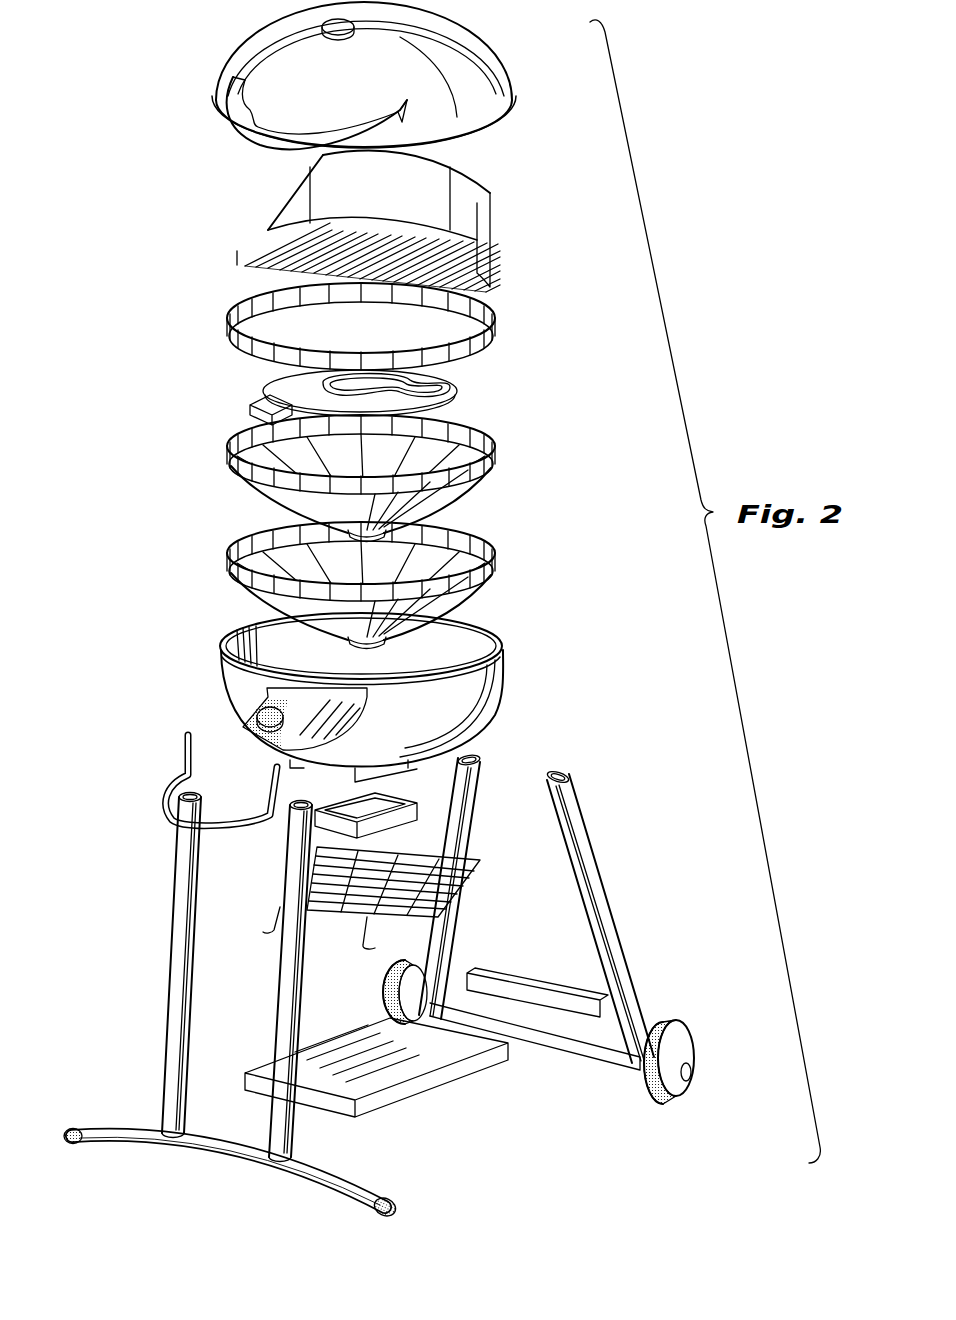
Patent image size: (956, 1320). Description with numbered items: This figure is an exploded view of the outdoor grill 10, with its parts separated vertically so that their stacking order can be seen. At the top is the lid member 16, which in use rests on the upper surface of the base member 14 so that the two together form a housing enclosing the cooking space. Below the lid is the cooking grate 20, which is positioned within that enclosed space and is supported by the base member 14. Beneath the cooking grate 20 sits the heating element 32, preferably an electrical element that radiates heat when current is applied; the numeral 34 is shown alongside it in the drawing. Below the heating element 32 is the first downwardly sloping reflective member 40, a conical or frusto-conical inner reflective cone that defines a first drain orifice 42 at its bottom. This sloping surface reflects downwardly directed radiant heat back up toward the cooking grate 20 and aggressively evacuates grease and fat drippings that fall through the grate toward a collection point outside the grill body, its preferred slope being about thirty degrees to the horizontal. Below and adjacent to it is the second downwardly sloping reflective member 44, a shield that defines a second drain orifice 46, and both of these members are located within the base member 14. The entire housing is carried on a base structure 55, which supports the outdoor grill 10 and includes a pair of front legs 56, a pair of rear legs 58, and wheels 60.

The outdoor grill 10 is at (656, 125).
The base member 14 is at (498, 672).
The lid member 16 is at (230, 62).
The cooking grate 20 is at (253, 250).
The heating element 32 is at (457, 390).
The diffuser opening 34 is at (386, 385).
The first downwardly sloping reflective member 40 is at (240, 438).
The first drain orifice 42 is at (400, 533).
The second downwardly sloping reflective member 44 is at (240, 533).
The second drain orifice 46 is at (383, 633).
The base structure 55 is at (607, 837).
The front legs 56 is at (163, 1030).
The rear legs 58 is at (452, 912).
The wheels 60 is at (390, 980).